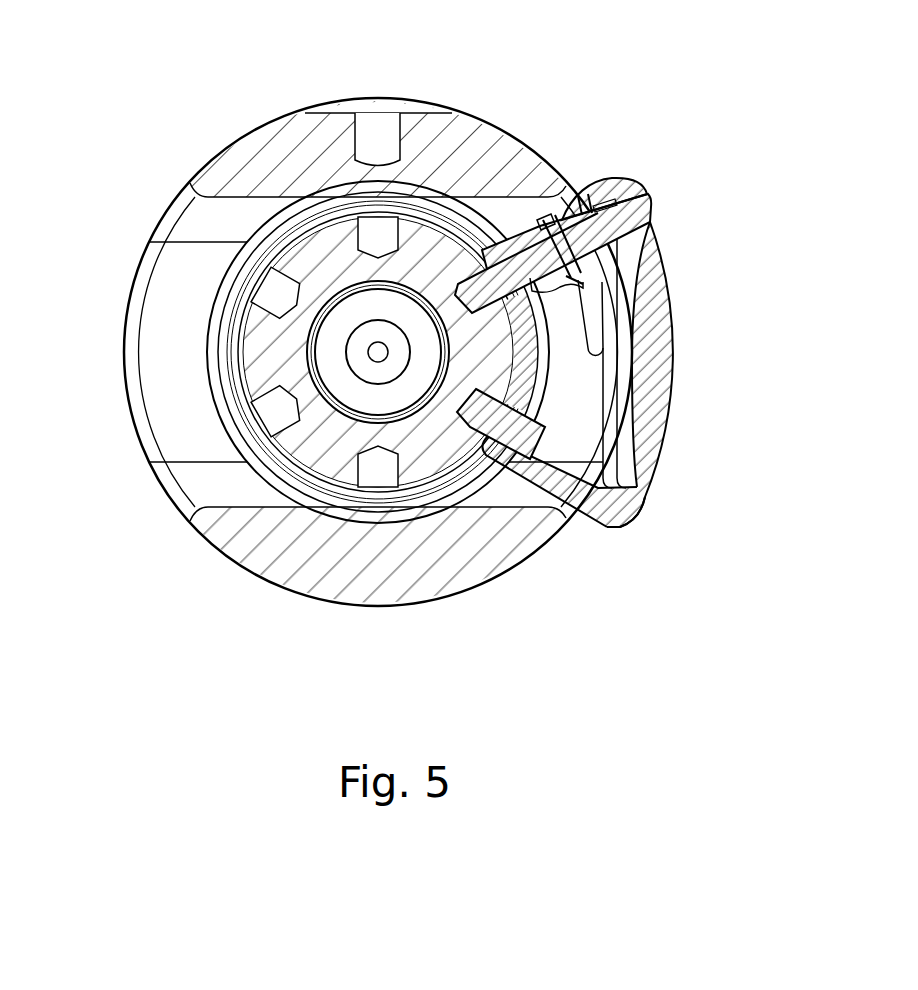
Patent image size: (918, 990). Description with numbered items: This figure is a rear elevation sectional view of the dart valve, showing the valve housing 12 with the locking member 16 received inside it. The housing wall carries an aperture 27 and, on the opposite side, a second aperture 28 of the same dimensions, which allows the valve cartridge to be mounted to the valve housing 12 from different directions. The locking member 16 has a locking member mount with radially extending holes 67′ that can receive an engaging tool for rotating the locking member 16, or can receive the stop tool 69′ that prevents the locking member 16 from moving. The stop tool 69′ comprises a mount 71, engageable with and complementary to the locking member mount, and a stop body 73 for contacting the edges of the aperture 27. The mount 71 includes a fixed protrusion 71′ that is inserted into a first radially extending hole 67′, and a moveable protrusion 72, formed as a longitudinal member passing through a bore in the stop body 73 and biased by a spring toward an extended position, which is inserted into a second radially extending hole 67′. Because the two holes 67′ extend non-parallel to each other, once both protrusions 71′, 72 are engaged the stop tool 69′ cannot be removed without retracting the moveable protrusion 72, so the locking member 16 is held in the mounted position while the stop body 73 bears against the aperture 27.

The valve housing 12 is at (249, 127).
The locking member 16 is at (304, 274).
The aperture 27 is at (560, 205).
The second aperture 28 is at (157, 292).
The radially extending hole 67′ is at (381, 237).
The stop tool 69′ is at (613, 544).
The mount 71 is at (516, 403).
The protrusion 71′ is at (510, 428).
The moveable protrusion 72 is at (580, 284).
The stop body 73 is at (673, 410).